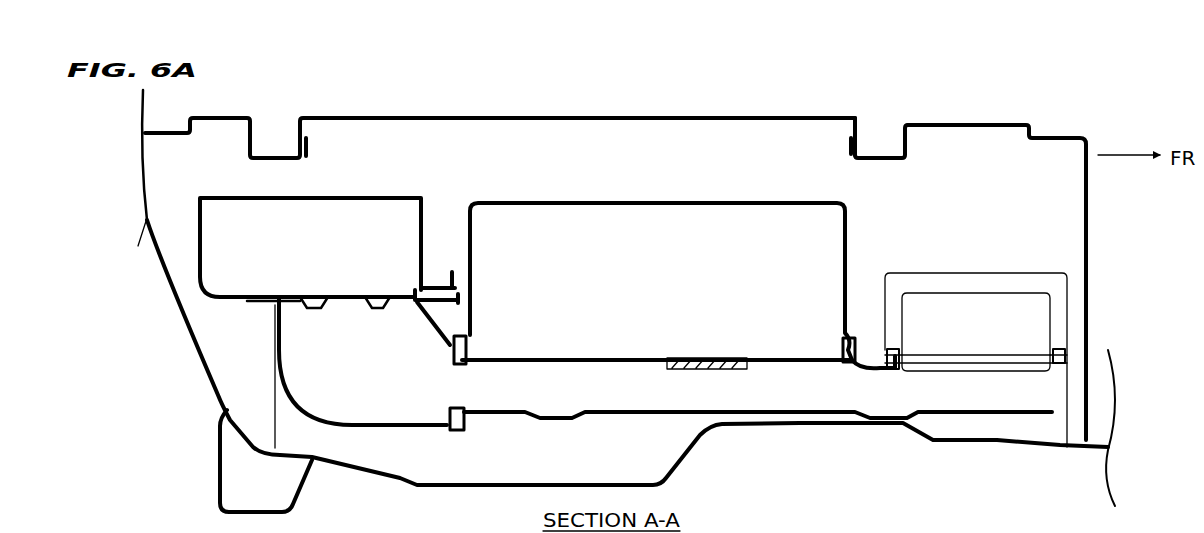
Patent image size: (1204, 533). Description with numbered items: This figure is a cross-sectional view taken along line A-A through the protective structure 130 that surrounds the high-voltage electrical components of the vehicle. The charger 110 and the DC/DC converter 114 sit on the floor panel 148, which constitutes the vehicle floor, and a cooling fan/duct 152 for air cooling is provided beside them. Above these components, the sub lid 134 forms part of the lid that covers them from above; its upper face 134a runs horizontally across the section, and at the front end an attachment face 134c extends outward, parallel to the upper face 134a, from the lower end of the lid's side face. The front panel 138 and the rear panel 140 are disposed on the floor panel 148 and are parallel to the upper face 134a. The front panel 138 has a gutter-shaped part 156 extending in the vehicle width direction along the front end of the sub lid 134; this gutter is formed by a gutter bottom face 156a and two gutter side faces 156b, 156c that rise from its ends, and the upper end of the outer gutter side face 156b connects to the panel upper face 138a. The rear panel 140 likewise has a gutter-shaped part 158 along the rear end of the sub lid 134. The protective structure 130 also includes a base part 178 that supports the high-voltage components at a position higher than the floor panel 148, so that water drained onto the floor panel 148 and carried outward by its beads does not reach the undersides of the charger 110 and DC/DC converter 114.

The charger 110 is at (527, 201).
The DC/DC converter 114 is at (1024, 280).
The protective structure 130 is at (173, 361).
The sub lid 134 is at (781, 116).
The upper face 134a is at (757, 116).
The attachment face 134c is at (888, 156).
The front panel 138 is at (1079, 128).
The panel upper face 138a is at (975, 122).
The rear panel 140 is at (218, 112).
The floor panel 148 is at (990, 447).
The cooling fan/duct 152 is at (418, 199).
The gutter-shaped part 156 is at (880, 166).
The gutter bottom face 156a is at (895, 162).
The gutter side face 156b is at (912, 136).
The gutter side face 156c is at (849, 142).
The gutter-shaped part 158 is at (308, 149).
The base part 178 is at (277, 422).